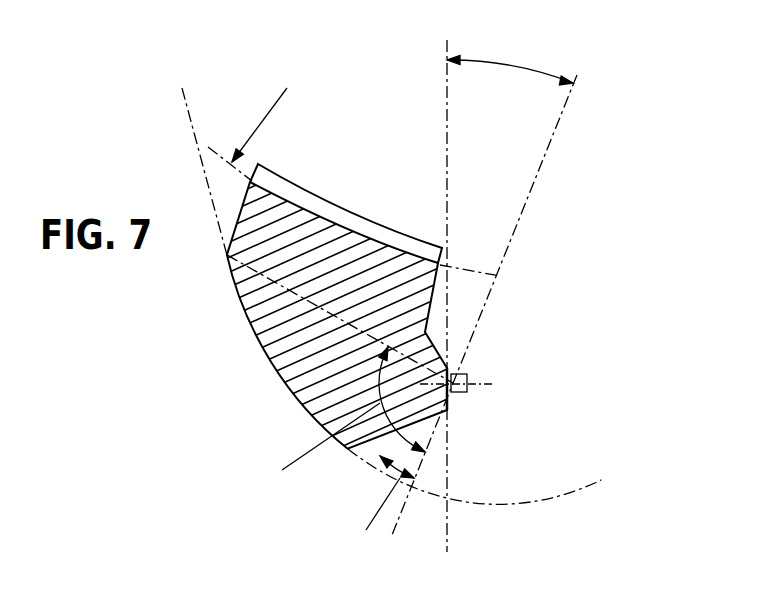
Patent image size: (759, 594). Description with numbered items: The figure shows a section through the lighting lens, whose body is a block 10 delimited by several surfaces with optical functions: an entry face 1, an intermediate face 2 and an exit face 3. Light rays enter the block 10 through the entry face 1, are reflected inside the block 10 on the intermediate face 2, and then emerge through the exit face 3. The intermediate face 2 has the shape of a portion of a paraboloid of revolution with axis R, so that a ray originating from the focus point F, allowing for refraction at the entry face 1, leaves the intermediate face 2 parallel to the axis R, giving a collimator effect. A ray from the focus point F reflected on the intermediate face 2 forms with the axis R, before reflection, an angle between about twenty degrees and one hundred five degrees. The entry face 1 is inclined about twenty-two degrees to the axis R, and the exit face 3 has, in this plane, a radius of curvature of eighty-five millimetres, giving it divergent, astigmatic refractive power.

The entry face 1 is at (455, 404).
The intermediate face 2 is at (242, 312).
The exit face 3 is at (303, 203).
The block 10 is at (628, 115).
The focus point F is at (468, 374).
The axis R is at (532, 195).